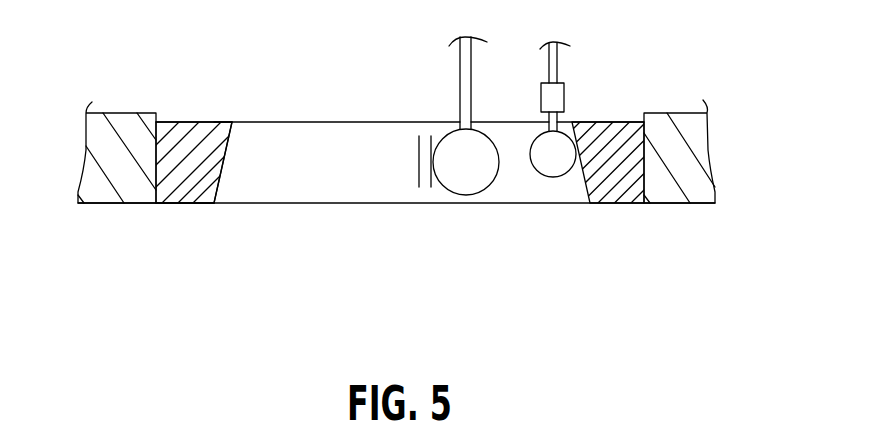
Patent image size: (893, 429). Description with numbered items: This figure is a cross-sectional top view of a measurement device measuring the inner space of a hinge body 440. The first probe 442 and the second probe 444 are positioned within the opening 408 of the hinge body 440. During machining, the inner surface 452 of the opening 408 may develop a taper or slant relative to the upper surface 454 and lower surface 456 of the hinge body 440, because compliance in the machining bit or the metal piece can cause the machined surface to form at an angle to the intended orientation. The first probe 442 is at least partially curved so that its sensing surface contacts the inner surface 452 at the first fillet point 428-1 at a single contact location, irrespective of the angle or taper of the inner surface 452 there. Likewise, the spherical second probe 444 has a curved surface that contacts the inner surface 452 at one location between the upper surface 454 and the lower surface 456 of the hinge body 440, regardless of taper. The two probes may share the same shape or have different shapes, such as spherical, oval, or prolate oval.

The opening 408 is at (296, 138).
The hinge body 440 is at (185, 139).
The upper surface 454 is at (229, 130).
The inner surface 452 is at (222, 168).
The lower surface 456 is at (220, 206).
The first fillet point 428-1 is at (442, 118).
The first probe 442 is at (478, 196).
The second probe 444 is at (564, 178).